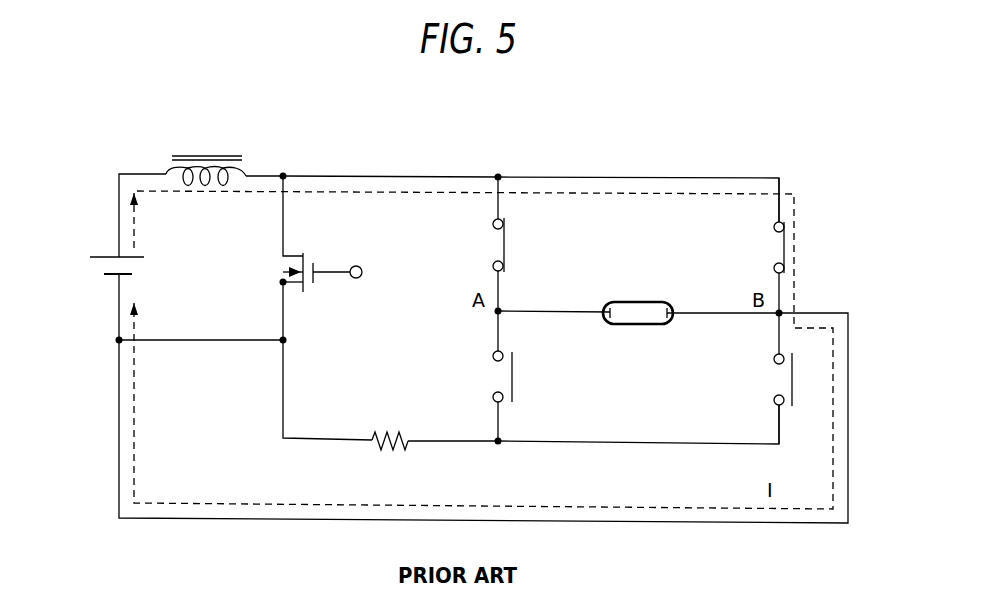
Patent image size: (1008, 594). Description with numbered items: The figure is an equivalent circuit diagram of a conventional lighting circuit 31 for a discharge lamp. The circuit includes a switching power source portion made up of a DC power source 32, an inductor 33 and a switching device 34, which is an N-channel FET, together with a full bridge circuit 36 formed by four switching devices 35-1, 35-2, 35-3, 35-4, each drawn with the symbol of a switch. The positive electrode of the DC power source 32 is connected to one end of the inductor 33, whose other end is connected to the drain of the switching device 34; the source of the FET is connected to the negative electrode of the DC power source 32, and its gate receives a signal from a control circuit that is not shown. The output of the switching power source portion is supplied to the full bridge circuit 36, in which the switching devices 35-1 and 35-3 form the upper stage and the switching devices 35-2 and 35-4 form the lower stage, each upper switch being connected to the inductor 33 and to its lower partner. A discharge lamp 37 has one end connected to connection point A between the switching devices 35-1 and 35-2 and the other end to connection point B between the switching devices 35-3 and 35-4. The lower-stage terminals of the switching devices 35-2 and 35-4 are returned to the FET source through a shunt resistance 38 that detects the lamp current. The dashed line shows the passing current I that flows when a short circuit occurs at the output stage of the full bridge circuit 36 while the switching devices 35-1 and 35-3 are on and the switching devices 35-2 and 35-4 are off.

The lighting circuit 31 is at (634, 135).
The DC power source 32 is at (108, 254).
The inductor 33 is at (247, 167).
The switching device 34 is at (303, 256).
The switching device 35-1 is at (506, 244).
The switching device 35-2 is at (514, 378).
The switching device 35-3 is at (777, 246).
The switching device 35-4 is at (790, 380).
The full bridge circuit 36 is at (649, 426).
The discharge lamp 37 is at (640, 302).
The shunt resistance 38 is at (388, 432).